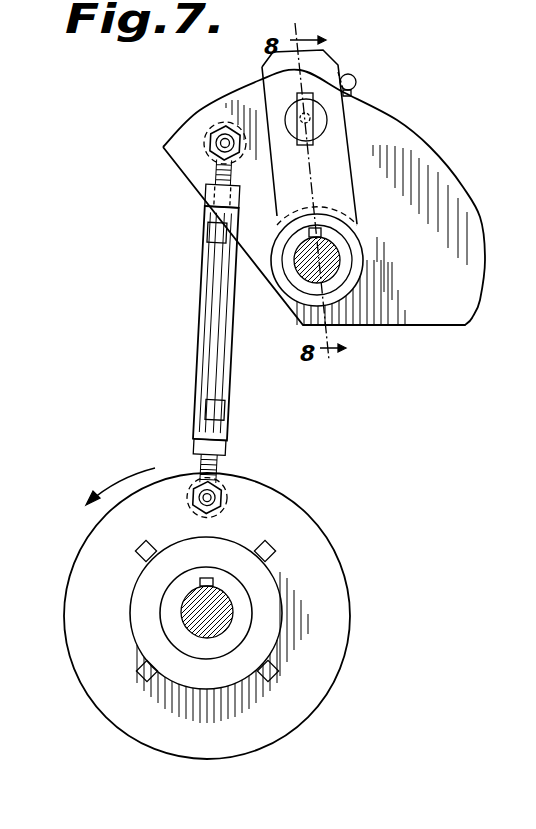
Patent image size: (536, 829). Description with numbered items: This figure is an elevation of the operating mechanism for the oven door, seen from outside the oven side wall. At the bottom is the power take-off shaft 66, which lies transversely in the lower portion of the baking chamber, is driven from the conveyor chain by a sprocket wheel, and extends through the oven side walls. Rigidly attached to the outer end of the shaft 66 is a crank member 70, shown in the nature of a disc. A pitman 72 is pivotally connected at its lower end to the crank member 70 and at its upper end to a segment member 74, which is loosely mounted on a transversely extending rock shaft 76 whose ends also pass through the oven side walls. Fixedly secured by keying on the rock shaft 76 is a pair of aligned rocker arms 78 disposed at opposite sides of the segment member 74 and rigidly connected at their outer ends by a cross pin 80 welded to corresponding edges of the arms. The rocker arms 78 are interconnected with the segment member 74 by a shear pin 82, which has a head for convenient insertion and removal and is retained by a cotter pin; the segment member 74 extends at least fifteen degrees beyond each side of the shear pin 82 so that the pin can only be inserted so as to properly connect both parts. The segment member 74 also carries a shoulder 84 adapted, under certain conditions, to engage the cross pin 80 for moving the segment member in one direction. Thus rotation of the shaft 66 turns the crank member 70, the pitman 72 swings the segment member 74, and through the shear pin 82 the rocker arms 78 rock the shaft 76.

The power take-off shaft 66 is at (185, 618).
The crank member 70 is at (323, 553).
The pitman 72 is at (202, 338).
The segment member 74 is at (460, 222).
The rock shaft 76 is at (335, 273).
The rocker arms 78 is at (341, 193).
The cross pin 80 is at (357, 81).
The shear pin 82 is at (308, 118).
The shoulder 84 is at (340, 72).